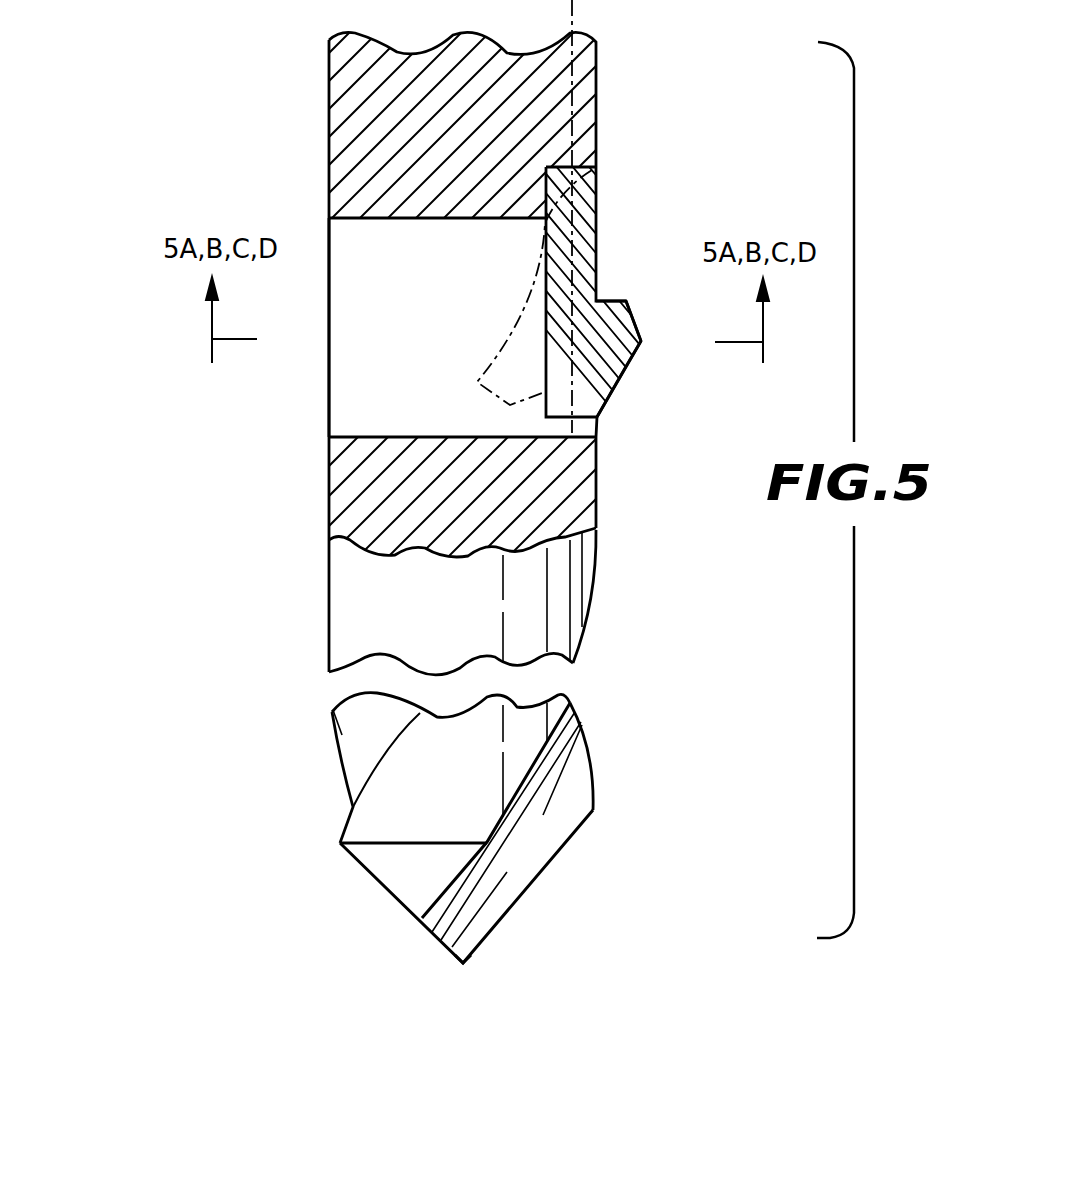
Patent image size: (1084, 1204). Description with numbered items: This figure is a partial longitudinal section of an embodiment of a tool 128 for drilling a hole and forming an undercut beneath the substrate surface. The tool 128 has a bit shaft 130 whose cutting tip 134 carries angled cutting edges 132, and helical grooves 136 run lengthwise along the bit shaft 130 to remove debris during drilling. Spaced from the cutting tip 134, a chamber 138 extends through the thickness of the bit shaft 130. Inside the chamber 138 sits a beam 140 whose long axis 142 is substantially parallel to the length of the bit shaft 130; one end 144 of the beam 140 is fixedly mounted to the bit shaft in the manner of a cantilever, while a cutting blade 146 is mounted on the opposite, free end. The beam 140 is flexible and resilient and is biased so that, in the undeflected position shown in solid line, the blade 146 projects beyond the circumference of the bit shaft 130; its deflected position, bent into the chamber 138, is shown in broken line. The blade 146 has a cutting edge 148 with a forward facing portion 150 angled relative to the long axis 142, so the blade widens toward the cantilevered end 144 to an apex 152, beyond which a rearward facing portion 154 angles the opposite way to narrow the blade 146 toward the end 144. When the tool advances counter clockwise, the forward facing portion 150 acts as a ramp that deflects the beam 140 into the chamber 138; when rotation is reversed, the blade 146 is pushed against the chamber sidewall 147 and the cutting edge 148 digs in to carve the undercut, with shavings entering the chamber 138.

The tool 128 is at (165, 438).
The bit shaft 130 is at (357, 598).
The angled cutting edges 132 is at (397, 900).
The cutting tip 134 is at (460, 968).
The helical grooves 136 is at (568, 783).
The chamber 138 is at (483, 319).
The beam 140 is at (585, 211).
The long axis 142 is at (573, 2).
The end 144 is at (597, 182).
The cutting blade 146 is at (632, 348).
The chamber sidewall 147 is at (383, 375).
The cutting edge 148 is at (626, 367).
The forward facing portion 150 is at (610, 406).
The apex 152 is at (643, 340).
The rearward facing portion 154 is at (635, 320).